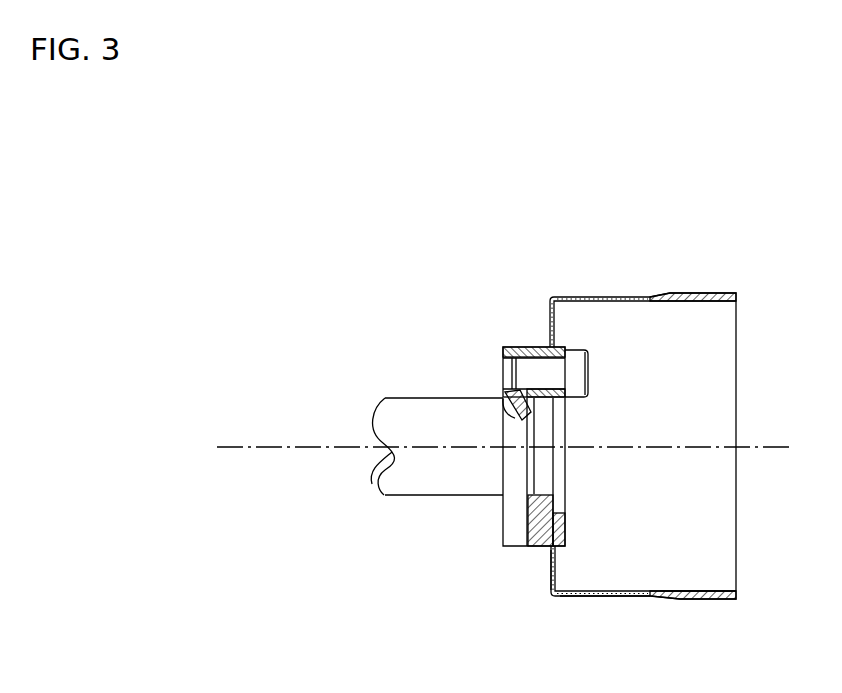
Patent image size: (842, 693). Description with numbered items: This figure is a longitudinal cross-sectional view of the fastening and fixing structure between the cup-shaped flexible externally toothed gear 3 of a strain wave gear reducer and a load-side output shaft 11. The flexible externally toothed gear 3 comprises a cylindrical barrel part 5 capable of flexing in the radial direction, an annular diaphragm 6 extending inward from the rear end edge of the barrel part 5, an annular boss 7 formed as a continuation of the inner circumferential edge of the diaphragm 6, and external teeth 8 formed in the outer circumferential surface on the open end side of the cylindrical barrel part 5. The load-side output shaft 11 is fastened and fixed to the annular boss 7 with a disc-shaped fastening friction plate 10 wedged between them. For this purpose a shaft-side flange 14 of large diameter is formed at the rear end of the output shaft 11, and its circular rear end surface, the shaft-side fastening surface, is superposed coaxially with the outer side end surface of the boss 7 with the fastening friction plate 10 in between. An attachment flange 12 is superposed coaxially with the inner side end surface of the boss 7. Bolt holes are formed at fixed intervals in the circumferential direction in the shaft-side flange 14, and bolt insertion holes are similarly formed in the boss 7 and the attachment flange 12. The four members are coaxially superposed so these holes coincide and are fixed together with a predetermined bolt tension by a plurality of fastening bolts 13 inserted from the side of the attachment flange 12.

The flexible externally toothed gear 3 is at (711, 282).
The cylindrical barrel part 5 is at (622, 596).
The annular diaphragm 6 is at (550, 568).
The annular boss 7 is at (554, 508).
The external teeth 8 is at (706, 600).
The fastening friction plate 10 is at (520, 528).
The load-side output shaft 11 is at (381, 485).
The attachment flange 12 is at (572, 546).
The fastening bolts 13 is at (596, 371).
The shaft-side flange 14 is at (503, 393).